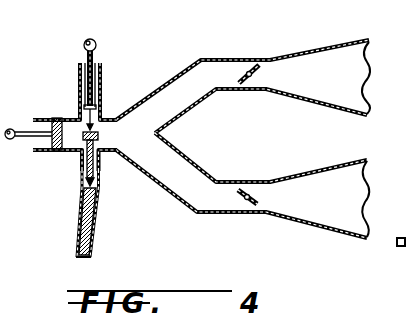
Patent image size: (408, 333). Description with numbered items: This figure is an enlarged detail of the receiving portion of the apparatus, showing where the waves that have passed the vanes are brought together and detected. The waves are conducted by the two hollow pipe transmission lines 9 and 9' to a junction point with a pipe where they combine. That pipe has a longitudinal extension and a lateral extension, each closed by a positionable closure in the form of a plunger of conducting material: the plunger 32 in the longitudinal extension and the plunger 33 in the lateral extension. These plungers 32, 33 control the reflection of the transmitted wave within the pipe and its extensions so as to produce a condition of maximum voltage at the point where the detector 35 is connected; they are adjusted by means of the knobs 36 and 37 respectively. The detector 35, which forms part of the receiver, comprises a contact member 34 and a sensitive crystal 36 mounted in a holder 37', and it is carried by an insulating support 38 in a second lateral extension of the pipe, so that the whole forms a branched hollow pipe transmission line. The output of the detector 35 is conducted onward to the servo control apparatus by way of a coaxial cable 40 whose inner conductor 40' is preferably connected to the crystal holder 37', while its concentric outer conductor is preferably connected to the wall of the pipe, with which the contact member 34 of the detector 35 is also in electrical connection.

The hollow pipe transmission line 9 is at (243, 86).
The hollow pipe transmission line 9' is at (242, 187).
The plunger 32 is at (94, 55).
The plunger 33 is at (47, 142).
The contact member 34 is at (86, 127).
The detector 35 is at (132, 143).
The knob 36 is at (90, 39).
The knob 37 is at (20, 109).
The holder 37' is at (72, 163).
The insulating support 38 is at (101, 170).
The coaxial cable 40 is at (103, 222).
The inner conductor 40' is at (103, 265).